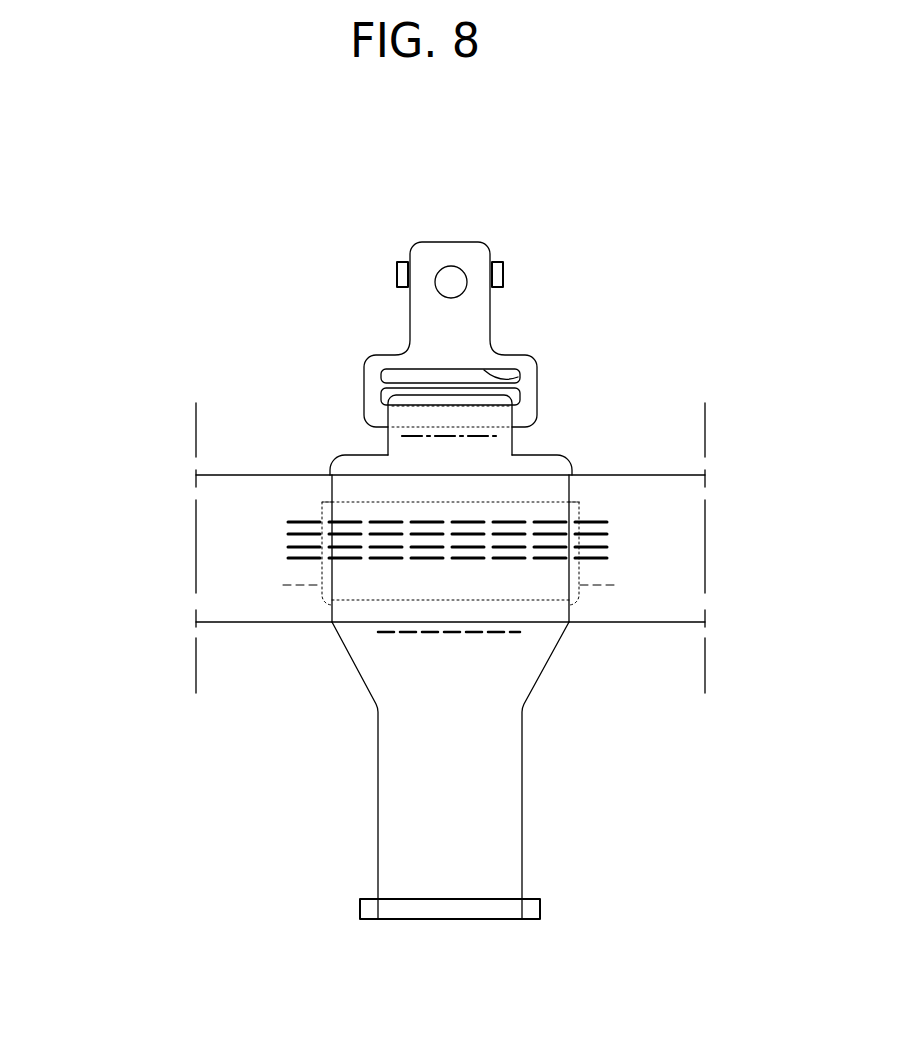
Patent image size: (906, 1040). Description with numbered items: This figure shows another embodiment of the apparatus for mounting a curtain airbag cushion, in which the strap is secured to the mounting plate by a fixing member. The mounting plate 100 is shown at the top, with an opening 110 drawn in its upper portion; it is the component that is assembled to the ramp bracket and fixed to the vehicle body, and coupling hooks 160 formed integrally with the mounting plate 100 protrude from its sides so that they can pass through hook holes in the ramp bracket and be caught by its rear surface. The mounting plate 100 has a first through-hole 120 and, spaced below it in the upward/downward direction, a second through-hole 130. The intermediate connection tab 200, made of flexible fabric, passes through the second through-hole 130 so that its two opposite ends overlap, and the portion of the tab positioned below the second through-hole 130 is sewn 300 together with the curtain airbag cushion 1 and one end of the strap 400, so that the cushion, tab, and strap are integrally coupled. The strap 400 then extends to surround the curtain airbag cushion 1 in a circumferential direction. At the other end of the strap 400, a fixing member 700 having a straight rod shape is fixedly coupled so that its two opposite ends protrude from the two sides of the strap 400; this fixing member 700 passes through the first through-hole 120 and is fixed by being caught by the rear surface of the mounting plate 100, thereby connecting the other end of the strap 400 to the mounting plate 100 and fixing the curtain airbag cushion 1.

The curtain airbag cushion 1 is at (675, 560).
The mounting plate 100 is at (470, 255).
The mounting hole 110 is at (438, 278).
The first through-hole 120 is at (519, 376).
The second through-hole 130 is at (380, 397).
The coupling hooks 160 is at (396, 272).
The intermediate connection tab 200 is at (505, 462).
The sewing 300 is at (300, 521).
The strap 400 is at (507, 803).
The fixing member 700 is at (370, 912).